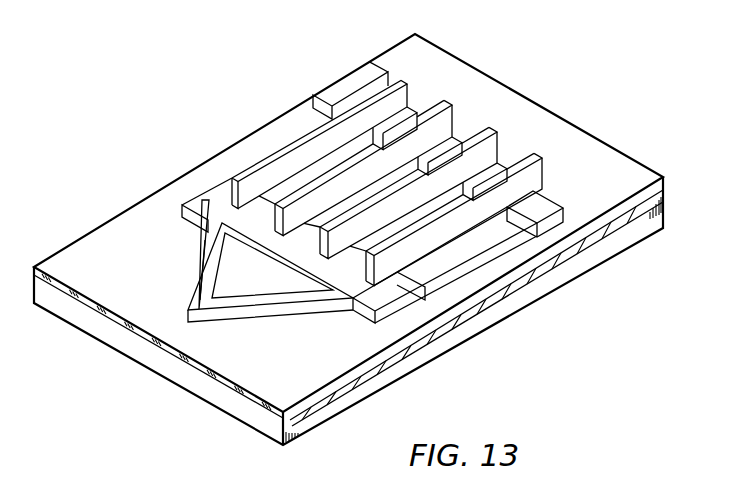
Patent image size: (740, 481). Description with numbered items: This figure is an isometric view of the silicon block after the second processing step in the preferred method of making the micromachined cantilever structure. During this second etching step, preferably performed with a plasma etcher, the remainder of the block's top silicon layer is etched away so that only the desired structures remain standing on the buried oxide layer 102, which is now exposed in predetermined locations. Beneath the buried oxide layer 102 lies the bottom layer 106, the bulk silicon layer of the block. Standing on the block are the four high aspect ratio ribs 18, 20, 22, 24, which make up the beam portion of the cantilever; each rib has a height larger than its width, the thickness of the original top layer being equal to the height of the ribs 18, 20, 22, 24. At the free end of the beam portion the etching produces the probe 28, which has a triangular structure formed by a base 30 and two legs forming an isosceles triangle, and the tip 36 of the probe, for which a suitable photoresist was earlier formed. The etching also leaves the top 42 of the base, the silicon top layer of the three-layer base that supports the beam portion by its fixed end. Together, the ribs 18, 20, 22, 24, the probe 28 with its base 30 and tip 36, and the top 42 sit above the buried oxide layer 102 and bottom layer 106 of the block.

The rib 18 is at (263, 157).
The rib 20 is at (447, 123).
The rib 22 is at (490, 153).
The rib 24 is at (535, 180).
The probe 28 is at (323, 320).
The base 30 is at (210, 198).
The tip 36 is at (197, 296).
The top layer 42 is at (352, 88).
The buried oxide layer 102 is at (407, 347).
The bottom layer 106 is at (482, 322).